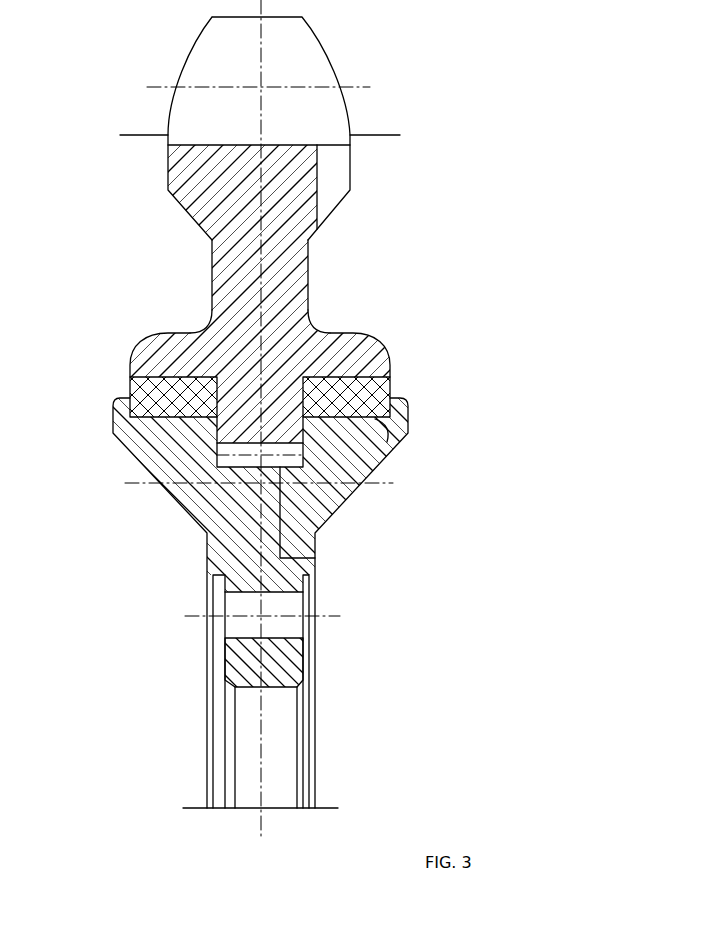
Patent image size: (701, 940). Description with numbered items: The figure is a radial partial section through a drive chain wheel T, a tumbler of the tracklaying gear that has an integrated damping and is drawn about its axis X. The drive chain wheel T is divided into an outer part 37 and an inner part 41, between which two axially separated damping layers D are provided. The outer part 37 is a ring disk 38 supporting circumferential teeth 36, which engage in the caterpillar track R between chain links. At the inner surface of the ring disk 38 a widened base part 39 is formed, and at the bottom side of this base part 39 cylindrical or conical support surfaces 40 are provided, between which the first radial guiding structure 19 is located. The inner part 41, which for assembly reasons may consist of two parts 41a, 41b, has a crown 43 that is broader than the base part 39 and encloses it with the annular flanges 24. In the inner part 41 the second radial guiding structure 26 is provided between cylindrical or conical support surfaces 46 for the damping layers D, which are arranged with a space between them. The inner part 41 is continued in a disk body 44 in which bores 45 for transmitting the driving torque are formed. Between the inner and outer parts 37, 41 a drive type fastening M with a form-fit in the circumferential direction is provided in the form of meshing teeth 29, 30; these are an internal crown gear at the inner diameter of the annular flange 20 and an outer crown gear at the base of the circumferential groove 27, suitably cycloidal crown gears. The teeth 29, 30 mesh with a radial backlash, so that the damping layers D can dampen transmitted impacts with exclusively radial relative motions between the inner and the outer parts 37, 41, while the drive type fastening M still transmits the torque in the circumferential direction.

The first radial guiding structure 19 is at (288, 373).
The annular flange 20 is at (235, 395).
The annular flanges 24 is at (113, 402).
The second radial guiding structure 26 is at (306, 448).
The circumferential groove 27 is at (215, 465).
The teeth 29 is at (263, 440).
The teeth 30 is at (240, 482).
The circumferential teeth 36 is at (320, 38).
The outer part 37 is at (333, 220).
The ring disk 38 is at (308, 240).
The base part 39 is at (347, 328).
The support surfaces 40 is at (175, 358).
The inner part 41 is at (184, 552).
The inner part portion 41a is at (207, 550).
The inner part portion 41b is at (320, 522).
The crown 43 is at (130, 463).
The disk body 44 is at (299, 658).
The bores 45 is at (299, 626).
The support surfaces 46 is at (403, 443).
The damping layers D is at (128, 378).
The drive type fastening M is at (211, 443).
The caterpillar track R is at (130, 134).
The drive chain wheel T is at (367, 157).
The axis X is at (337, 808).